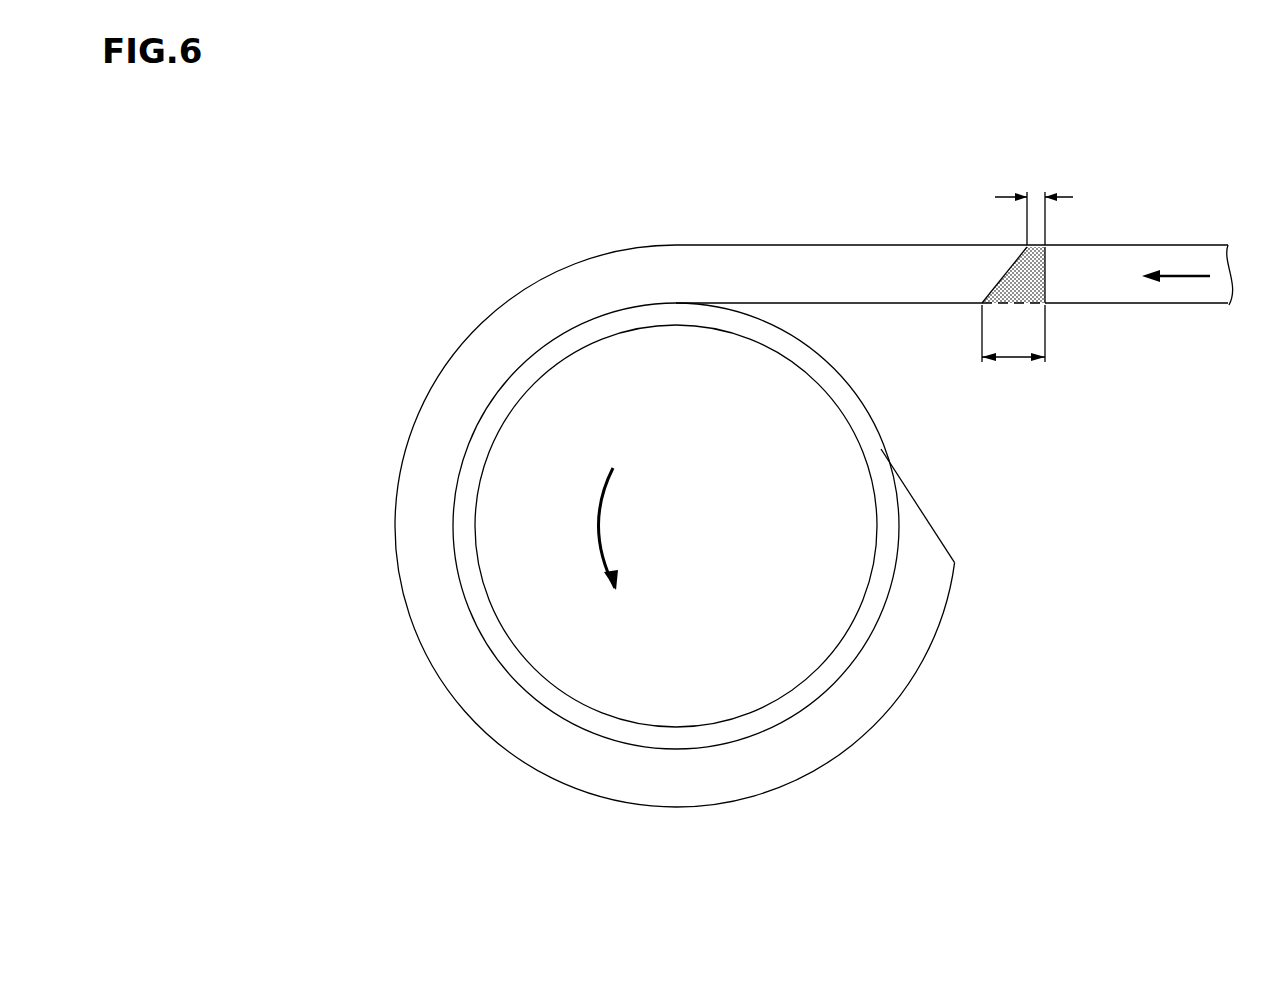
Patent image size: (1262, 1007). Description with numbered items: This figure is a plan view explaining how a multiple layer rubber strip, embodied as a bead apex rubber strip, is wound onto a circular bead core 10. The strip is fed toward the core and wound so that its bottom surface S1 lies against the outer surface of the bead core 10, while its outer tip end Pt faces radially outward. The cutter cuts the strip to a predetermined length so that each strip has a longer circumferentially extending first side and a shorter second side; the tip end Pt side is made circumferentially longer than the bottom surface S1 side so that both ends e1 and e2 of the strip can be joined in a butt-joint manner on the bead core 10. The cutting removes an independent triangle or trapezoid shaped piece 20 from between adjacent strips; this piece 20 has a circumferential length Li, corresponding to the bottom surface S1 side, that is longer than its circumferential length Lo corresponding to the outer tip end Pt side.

The bead core 10 is at (588, 347).
The triangle or trapezoid shaped piece 20 is at (1022, 278).
The outer tip end Pt is at (702, 247).
The bottom surface S1 is at (800, 304).
The end of the bead apex rubber strip e1 is at (935, 522).
The end of the bead apex rubber strip e2 is at (1004, 283).
The circumferential length corresponding to the outer tip end side Lo is at (1034, 265).
The circumferential length corresponding to the bottom surface side Li is at (1013, 348).